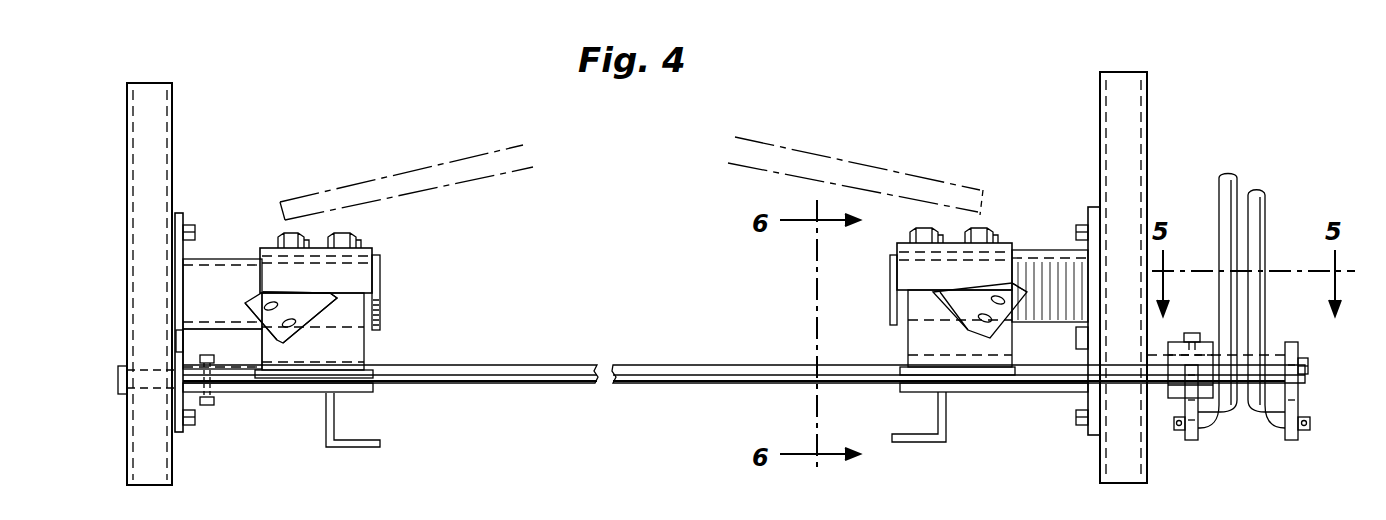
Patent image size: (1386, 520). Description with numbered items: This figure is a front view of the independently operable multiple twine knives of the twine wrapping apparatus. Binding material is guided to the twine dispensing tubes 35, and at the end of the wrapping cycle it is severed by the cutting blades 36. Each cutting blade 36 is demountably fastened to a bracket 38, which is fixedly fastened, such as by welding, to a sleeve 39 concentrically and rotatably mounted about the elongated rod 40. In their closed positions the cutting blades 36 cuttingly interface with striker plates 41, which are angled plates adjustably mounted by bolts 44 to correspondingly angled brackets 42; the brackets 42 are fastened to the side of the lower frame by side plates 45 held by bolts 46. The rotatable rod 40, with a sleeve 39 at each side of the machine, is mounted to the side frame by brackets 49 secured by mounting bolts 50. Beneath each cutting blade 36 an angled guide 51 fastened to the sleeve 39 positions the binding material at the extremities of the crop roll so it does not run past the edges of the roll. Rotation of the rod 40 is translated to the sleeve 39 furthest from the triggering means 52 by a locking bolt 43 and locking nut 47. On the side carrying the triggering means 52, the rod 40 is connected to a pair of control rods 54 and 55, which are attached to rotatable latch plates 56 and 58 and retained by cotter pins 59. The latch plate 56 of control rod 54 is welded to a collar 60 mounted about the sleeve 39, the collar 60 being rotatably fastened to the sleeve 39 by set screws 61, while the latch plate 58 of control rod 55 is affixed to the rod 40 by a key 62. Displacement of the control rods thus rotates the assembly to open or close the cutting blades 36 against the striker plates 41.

The twine dispensing tubes 35 is at (400, 170).
The cutting blades 36 is at (250, 300).
The brackets 38 is at (364, 345).
The sleeves 39 is at (280, 392).
The elongated rod 40 is at (732, 362).
The striker plates 41 is at (375, 252).
The brackets 42 is at (210, 259).
The locking bolt 43 is at (212, 355).
The bolts 44 is at (292, 233).
The side plates 45 is at (179, 213).
The bolts 46 is at (195, 232).
The locking nut 47 is at (214, 402).
The brackets 49 is at (178, 432).
The mounting bolts 50 is at (195, 417).
The angled guide 51 is at (345, 440).
The triggering means 52 is at (1190, 195).
The control rod 54 is at (1235, 185).
The control rod 55 is at (1266, 205).
The latch plate 56 is at (1198, 438).
The latch plate 58 is at (1292, 440).
The cotter pins 59 is at (1180, 430).
The collar 60 is at (1172, 398).
The set screws 61 is at (1192, 333).
The key 62 is at (1308, 360).